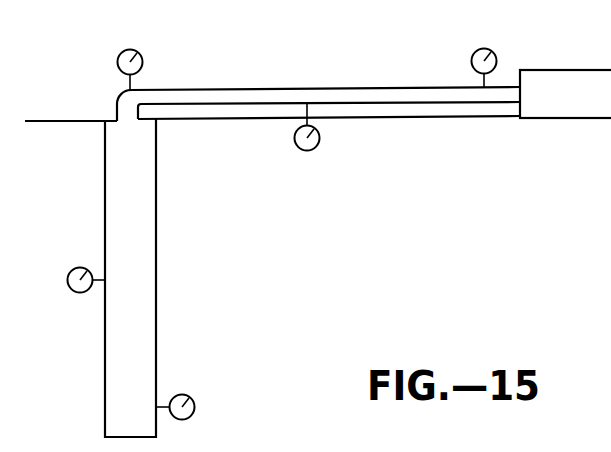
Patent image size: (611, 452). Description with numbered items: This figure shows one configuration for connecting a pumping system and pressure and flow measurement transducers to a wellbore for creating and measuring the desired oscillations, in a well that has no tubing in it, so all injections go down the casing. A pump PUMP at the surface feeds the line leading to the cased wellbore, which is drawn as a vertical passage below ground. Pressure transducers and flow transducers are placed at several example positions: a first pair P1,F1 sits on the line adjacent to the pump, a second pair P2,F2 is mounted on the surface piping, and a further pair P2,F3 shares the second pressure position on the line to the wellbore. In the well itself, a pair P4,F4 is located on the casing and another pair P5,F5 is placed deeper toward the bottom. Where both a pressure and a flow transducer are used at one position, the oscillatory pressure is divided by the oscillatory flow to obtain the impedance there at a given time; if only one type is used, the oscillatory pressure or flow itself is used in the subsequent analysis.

The pressure transducer and flow transducer P1,F1 is at (519, 61).
The pressure transducer and flow transducer P2,F2 is at (340, 127).
The pressure transducer and flow transducer P2,F3 is at (165, 70).
The pressure transducer and flow transducer P4,F4 is at (68, 267).
The pressure transducer and flow transducer P5,F5 is at (212, 406).
The pump PUMP is at (565, 94).